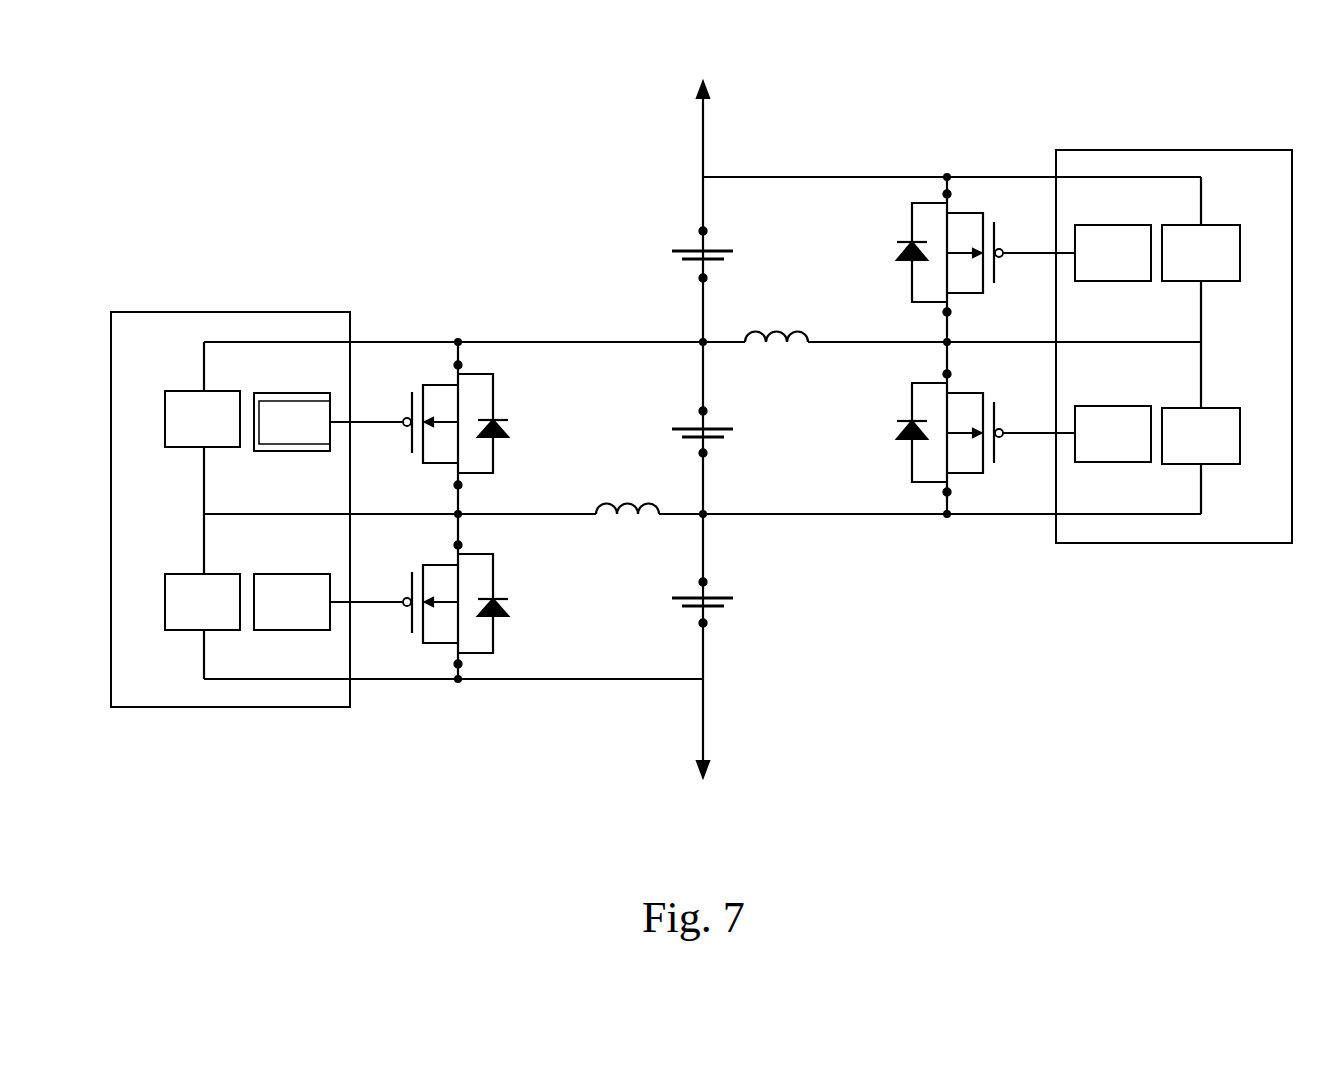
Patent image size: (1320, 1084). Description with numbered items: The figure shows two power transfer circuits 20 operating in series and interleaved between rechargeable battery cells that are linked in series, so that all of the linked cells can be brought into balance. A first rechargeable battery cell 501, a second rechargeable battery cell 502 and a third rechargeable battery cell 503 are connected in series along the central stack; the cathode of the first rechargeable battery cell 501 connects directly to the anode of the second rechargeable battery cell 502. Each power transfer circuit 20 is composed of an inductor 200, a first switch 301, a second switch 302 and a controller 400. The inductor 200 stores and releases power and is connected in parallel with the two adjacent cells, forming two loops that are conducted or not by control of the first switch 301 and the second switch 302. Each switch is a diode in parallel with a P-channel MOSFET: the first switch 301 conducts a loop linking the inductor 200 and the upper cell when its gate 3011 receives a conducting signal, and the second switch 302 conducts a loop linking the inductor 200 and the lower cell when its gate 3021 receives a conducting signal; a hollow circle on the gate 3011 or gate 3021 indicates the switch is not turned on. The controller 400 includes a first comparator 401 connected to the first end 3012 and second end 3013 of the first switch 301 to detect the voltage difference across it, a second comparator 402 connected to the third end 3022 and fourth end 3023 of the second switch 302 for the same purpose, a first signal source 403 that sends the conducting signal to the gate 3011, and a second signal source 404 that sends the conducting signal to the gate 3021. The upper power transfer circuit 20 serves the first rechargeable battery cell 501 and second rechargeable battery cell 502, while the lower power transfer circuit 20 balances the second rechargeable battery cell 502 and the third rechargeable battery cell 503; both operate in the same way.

The power transfer circuit 20 is at (237, 282).
The inductor 200 is at (615, 516).
The first switch 301 is at (493, 445).
The second switch 302 is at (493, 632).
The gate 3011 is at (403, 422).
The first end 3012 is at (458, 485).
The second end 3013 is at (458, 365).
The gate 3021 is at (403, 602).
The third end 3022 is at (458, 664).
The fourth end 3023 is at (458, 545).
The controller 400 is at (1140, 545).
The first comparator 401 is at (221, 430).
The second comparator 402 is at (221, 613).
The first signal source 403 is at (311, 432).
The second signal source 404 is at (311, 613).
The first rechargeable battery cell 501 is at (683, 249).
The second rechargeable battery cell 502 is at (683, 427).
The third rechargeable battery cell 503 is at (683, 597).